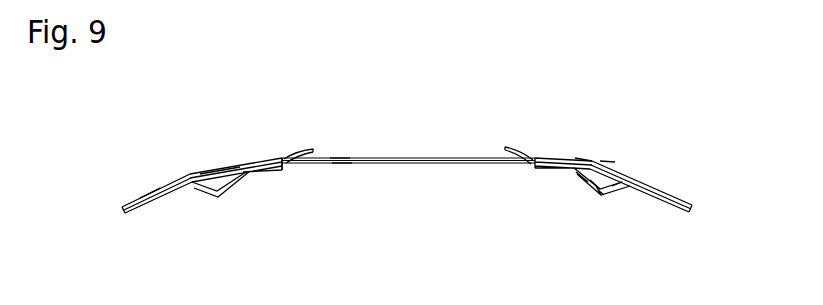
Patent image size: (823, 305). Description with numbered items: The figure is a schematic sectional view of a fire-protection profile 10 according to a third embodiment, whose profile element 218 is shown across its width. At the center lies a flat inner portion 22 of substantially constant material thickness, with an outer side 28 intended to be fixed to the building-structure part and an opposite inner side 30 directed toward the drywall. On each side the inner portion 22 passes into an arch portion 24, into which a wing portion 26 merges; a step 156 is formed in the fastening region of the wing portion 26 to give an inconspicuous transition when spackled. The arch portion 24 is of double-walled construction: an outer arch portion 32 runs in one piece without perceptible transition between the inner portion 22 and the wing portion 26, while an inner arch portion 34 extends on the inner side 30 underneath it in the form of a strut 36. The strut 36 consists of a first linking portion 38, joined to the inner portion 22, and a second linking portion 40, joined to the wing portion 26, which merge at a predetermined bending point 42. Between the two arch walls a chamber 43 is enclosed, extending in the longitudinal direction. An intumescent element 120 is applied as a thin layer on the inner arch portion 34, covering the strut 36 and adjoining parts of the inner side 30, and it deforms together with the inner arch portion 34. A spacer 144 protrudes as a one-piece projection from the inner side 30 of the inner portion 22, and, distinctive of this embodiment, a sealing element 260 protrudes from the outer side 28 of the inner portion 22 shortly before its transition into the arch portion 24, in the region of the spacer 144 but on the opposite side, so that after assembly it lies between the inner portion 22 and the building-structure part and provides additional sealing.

The fire-protection profile 10 is at (483, 70).
The inner portion 22 is at (420, 158).
The arch portion 24 is at (191, 160).
The wing portion 26 is at (132, 203).
The outer side 28 is at (338, 144).
The inner side 30 is at (341, 168).
The outer arch portion 32 is at (588, 158).
The inner arch portion 34 is at (587, 192).
The strut 36 is at (598, 190).
The first linking portion 38 is at (577, 183).
The second linking portion 40 is at (620, 188).
The predetermined bending point 42 is at (599, 197).
The chamber 43 is at (610, 158).
The intumescent element 120 is at (237, 180).
The spacer 144 is at (278, 158).
The step 156 is at (148, 192).
The profile element 218 is at (199, 110).
The sealing element 260 is at (300, 150).